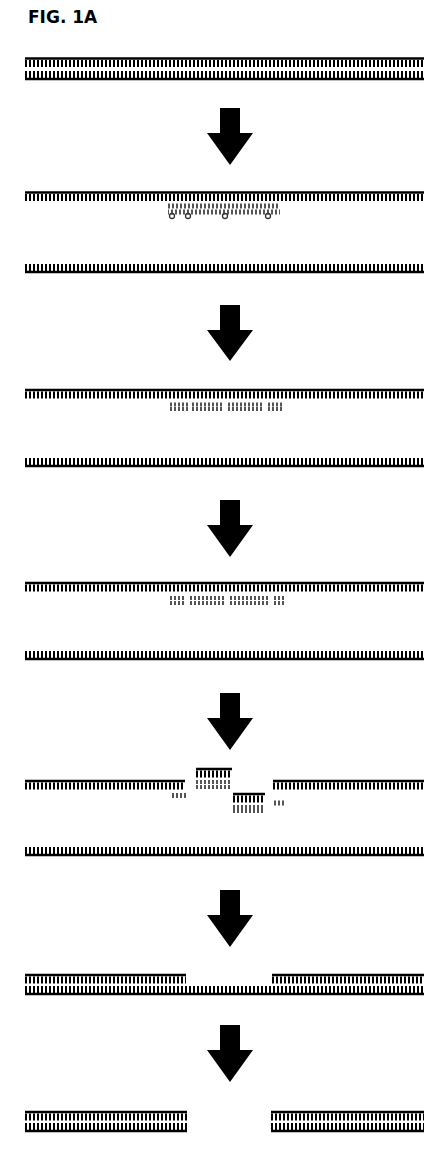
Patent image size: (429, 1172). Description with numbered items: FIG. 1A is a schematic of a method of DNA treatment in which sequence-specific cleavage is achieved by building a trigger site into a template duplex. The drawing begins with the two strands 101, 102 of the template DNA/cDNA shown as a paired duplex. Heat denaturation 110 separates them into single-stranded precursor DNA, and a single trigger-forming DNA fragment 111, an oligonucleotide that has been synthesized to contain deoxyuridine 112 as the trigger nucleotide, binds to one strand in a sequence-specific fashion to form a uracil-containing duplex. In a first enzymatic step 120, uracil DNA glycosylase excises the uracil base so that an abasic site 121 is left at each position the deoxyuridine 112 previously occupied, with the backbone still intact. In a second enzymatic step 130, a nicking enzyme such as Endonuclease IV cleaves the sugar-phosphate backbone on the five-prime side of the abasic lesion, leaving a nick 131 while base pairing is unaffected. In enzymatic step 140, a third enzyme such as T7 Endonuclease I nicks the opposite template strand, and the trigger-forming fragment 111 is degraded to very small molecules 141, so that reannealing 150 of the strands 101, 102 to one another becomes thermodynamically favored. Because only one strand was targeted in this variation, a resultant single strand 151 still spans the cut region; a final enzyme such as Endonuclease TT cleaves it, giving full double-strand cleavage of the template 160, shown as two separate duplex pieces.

The strand of template DNA/cDNA 101 is at (104, 57).
The strand of template DNA/cDNA 102 is at (106, 82).
The heat denaturation 110 is at (263, 136).
The trigger-forming DNA fragment 111 is at (172, 218).
The deoxyuridine 112 is at (268, 218).
The first enzymatic step 120 is at (263, 333).
The abasic site 121 is at (226, 411).
The second enzymatic step 130 is at (263, 528).
The nick 131 is at (226, 606).
The enzymatic step 140 is at (263, 721).
The very small molecules 141 is at (233, 800).
The reannealing 150 is at (263, 918).
The resultant single strand 151 is at (233, 977).
The double-strand cleavage of the template 160 is at (263, 1053).